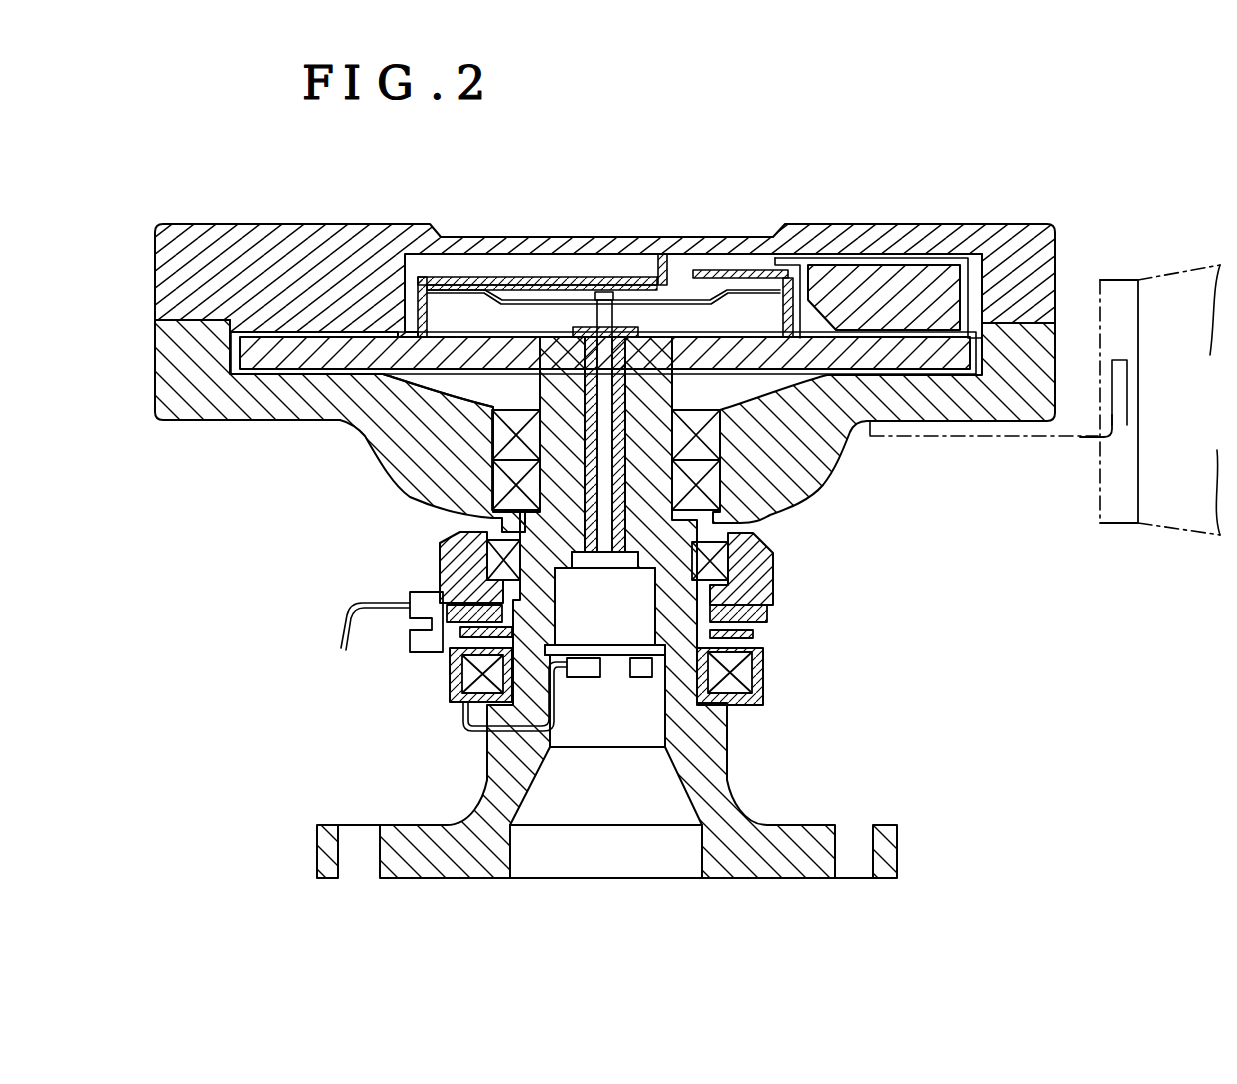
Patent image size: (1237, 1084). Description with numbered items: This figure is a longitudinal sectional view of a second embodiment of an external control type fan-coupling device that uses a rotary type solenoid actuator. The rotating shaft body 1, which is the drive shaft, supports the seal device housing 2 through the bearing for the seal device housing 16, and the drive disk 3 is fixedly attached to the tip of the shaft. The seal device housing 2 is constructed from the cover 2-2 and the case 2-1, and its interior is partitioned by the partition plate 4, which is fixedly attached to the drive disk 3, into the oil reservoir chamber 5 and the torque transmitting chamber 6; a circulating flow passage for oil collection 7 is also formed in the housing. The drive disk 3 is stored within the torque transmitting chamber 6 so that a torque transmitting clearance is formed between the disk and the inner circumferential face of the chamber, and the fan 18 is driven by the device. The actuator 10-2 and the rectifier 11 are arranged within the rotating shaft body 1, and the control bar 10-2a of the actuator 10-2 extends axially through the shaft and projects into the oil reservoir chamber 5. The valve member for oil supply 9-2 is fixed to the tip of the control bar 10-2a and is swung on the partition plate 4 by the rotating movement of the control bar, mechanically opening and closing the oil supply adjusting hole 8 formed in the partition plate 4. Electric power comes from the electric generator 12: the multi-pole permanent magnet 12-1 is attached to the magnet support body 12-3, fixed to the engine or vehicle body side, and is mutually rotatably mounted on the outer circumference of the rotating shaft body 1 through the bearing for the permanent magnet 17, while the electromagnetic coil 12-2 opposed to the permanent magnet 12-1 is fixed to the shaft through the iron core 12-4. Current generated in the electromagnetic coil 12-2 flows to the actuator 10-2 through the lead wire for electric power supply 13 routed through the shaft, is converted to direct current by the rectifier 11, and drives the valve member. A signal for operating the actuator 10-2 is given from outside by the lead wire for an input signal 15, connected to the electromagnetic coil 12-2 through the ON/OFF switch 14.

The rotating shaft body 1 is at (717, 745).
The seal device housing 2 is at (938, 190).
The case 2-1 is at (245, 400).
The cover 2-2 is at (300, 240).
The drive disk 3 is at (877, 360).
The partition plate 4 is at (565, 278).
The oil reservoir chamber 5 is at (440, 312).
The torque transmitting chamber 6 is at (400, 380).
The circulating flow passage for oil collection 7 is at (877, 258).
The oil supply adjusting hole 8 is at (462, 283).
The valve member for oil supply 9-2 is at (507, 290).
The actuator 10-2 is at (620, 630).
The control bar 10-2a is at (615, 312).
The rectifier 11 is at (582, 680).
The electric generator 12 is at (785, 643).
The permanent magnet 12-1 is at (770, 612).
The electromagnetic coil 12-2 is at (748, 680).
The magnet support body 12-3 is at (450, 553).
The iron core 12-4 is at (745, 712).
The lead wire for electric power supply 13 is at (467, 722).
The ON/OFF switch 14 is at (418, 622).
The lead wire for an input signal 15 is at (352, 606).
The bearing for the seal device housing 16 is at (712, 437).
The bearing for the permanent magnet 17 is at (722, 562).
The fan 18 is at (1157, 523).